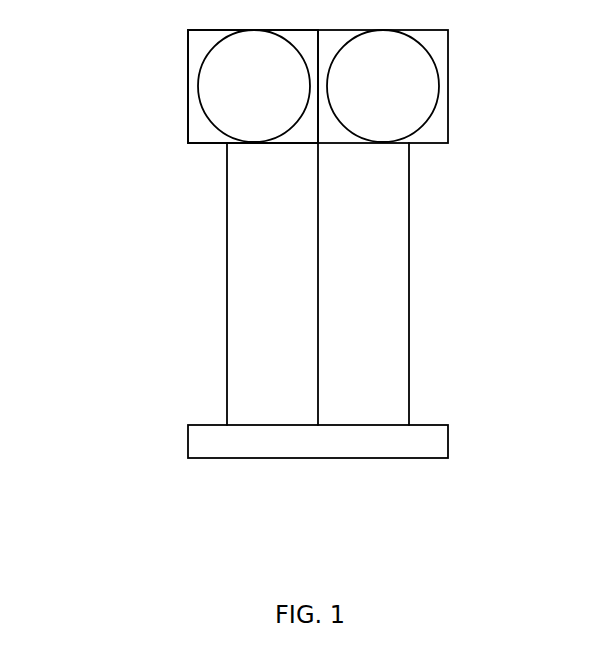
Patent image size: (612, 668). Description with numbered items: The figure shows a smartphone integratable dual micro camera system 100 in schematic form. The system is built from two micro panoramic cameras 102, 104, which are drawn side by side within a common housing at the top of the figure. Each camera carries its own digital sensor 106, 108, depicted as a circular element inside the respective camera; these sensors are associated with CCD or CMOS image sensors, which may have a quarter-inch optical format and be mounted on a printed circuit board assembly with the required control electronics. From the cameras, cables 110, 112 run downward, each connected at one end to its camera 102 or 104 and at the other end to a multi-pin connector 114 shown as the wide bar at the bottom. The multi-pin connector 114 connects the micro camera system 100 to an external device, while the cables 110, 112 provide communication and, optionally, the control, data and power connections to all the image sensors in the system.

The smartphone integratable dual micro camera system 100 is at (183, 324).
The micro panoramic camera 102 is at (448, 85).
The micro panoramic camera 104 is at (188, 113).
The digital sensor 106 is at (380, 112).
The digital sensor 108 is at (232, 77).
The cable 110 is at (409, 280).
The cable 112 is at (227, 231).
The multi-pin connector 114 is at (448, 440).